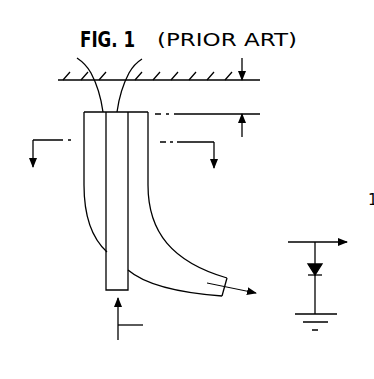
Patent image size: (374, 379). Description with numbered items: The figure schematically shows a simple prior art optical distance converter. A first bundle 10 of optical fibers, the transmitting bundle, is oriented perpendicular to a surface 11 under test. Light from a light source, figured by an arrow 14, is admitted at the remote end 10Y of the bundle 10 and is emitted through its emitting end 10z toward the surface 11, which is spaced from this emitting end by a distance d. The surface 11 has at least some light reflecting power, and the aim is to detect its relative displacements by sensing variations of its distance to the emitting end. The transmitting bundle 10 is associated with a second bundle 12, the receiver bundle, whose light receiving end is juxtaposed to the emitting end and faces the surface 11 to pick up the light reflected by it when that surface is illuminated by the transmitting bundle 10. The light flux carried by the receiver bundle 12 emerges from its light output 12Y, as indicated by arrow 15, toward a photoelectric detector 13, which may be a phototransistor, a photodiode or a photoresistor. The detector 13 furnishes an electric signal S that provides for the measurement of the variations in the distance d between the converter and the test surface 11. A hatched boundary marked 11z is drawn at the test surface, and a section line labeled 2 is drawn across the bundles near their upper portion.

The bundle of optical fibers 10 is at (120, 213).
The emitting end 10z is at (142, 81).
The remote end 10Y is at (108, 290).
The surface under test 11 is at (92, 80).
The lead of element 11 11z is at (73, 81).
The receiver bundle 12 is at (98, 190).
The light output 12Y is at (247, 258).
The photoelectric detector 13 is at (324, 270).
The arrow representing light from a light source 14 is at (141, 319).
The arrow indicating emerging light flux 15 is at (230, 290).
The section line 2- 2 is at (123, 167).
The distance d is at (207, 97).
The electric signal S is at (322, 243).